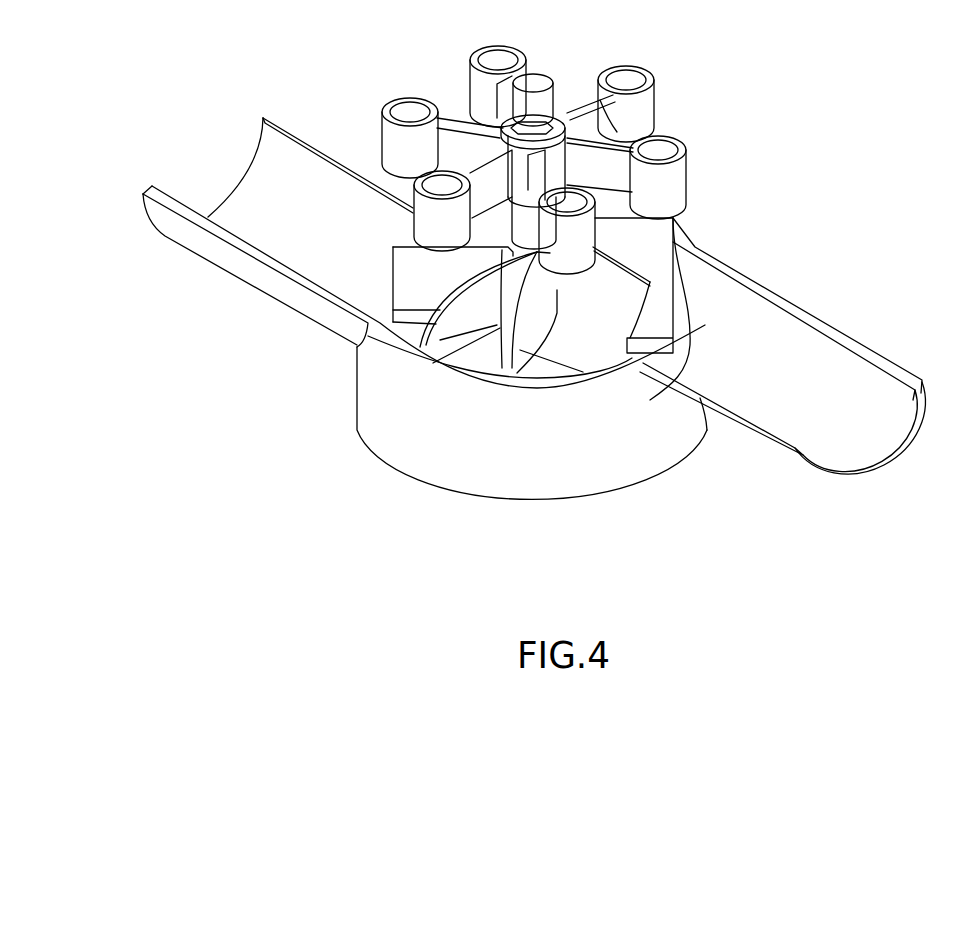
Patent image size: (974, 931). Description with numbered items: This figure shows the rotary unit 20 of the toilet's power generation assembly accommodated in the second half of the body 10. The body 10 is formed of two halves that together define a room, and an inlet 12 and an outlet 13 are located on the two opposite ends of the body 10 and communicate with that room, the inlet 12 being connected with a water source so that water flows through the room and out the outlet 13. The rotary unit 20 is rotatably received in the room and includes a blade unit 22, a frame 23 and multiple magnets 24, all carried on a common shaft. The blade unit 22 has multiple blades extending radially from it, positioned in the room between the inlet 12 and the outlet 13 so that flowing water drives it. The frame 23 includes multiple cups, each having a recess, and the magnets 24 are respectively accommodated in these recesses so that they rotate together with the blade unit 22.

The body 10 is at (867, 353).
The inlet 12 is at (873, 445).
The outlet 13 is at (268, 175).
The rotary unit 20 is at (655, 250).
The blade unit 22 is at (457, 333).
The frame 23 is at (643, 109).
The magnets 24 is at (497, 60).